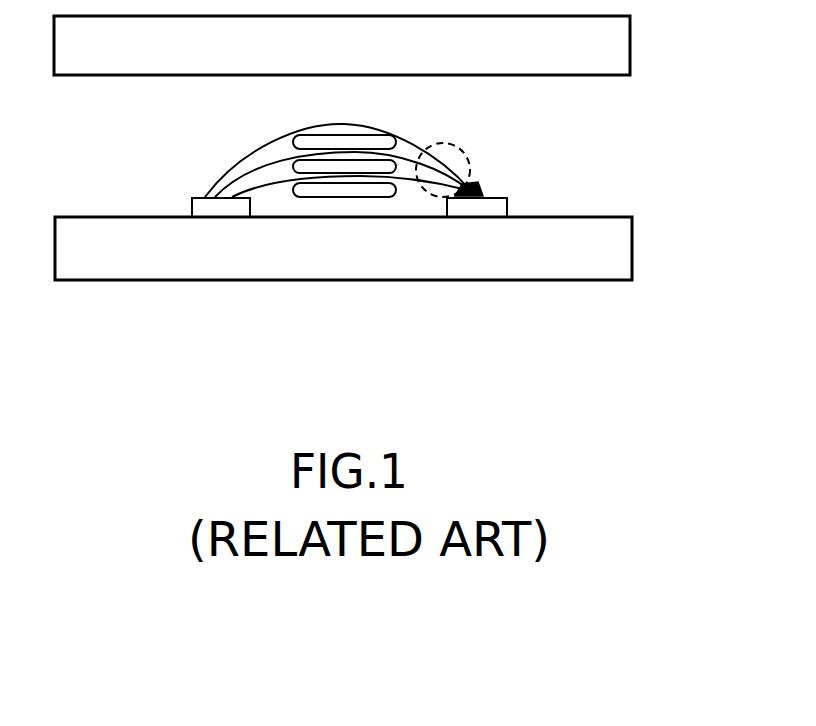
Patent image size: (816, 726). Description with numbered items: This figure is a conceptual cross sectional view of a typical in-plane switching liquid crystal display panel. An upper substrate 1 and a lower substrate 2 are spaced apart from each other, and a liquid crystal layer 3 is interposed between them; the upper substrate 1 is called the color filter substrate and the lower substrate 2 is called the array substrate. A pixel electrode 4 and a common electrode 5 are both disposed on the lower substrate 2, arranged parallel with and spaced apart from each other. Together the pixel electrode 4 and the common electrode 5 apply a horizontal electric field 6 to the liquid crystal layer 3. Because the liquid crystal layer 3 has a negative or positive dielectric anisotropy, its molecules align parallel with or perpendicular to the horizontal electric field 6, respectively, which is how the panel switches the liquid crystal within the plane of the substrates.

The upper substrate 1 is at (608, 50).
The lower substrate 2 is at (620, 252).
The liquid crystal layer 3 is at (335, 198).
The pixel electrode 4 is at (217, 208).
The common electrode 5 is at (487, 205).
The horizontal electric field 6 is at (423, 183).